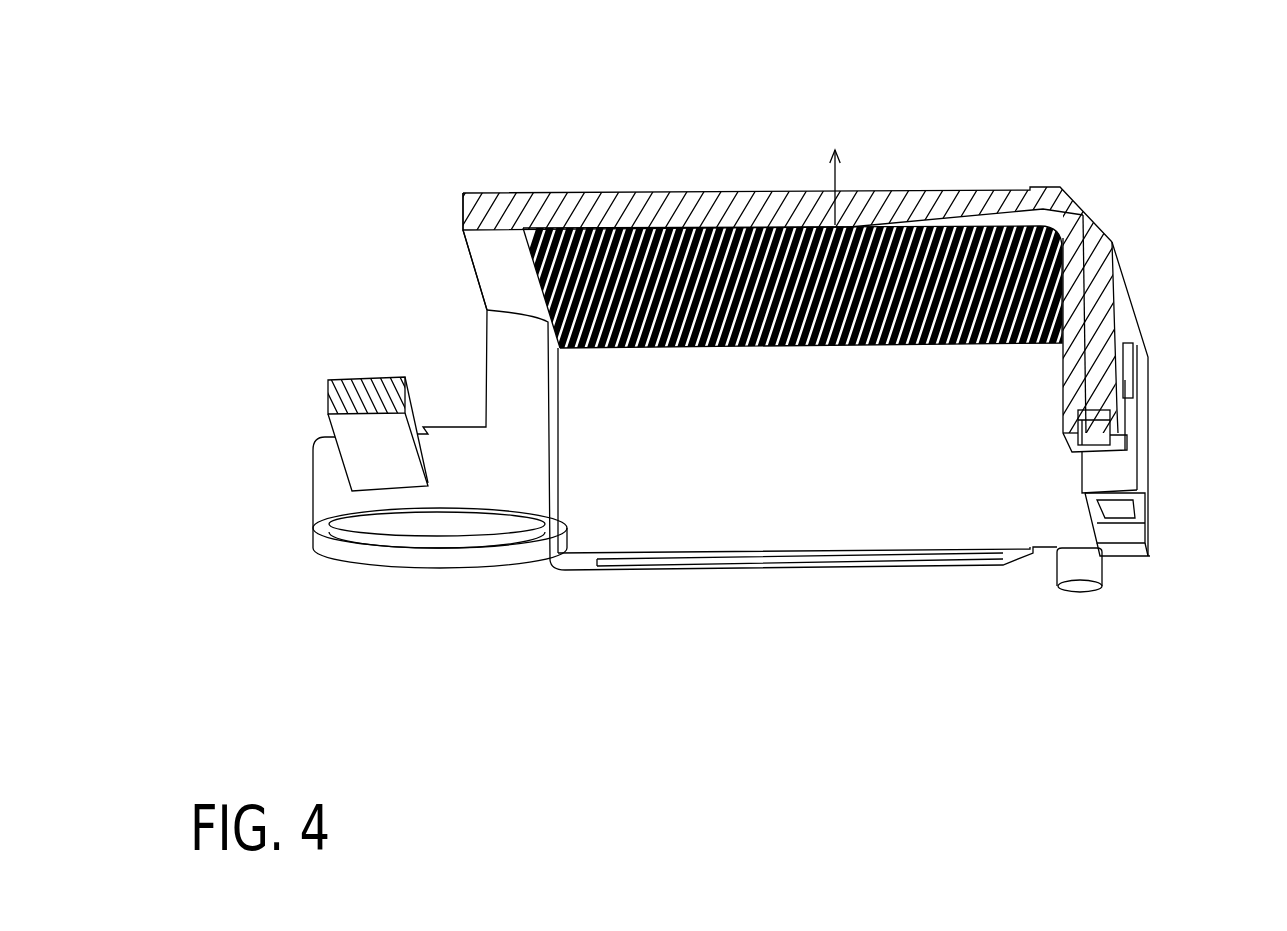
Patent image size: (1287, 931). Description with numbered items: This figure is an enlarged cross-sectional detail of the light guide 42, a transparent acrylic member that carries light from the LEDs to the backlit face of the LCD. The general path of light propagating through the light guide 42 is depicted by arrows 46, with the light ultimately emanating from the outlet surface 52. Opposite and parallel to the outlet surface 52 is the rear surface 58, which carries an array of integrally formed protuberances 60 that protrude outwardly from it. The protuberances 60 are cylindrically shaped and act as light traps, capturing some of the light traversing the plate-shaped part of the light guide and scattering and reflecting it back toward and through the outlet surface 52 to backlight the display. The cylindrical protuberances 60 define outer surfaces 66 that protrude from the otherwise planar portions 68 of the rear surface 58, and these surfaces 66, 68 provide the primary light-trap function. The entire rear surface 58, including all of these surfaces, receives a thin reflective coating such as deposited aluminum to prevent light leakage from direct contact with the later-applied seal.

The light guide 42 is at (897, 185).
The path arrows 46 is at (1090, 280).
The outlet surface 52 is at (965, 190).
The rear surface 58 is at (763, 349).
The protuberances 60 is at (548, 192).
The outer surfaces 66 is at (590, 230).
The planar portions 68 is at (655, 229).